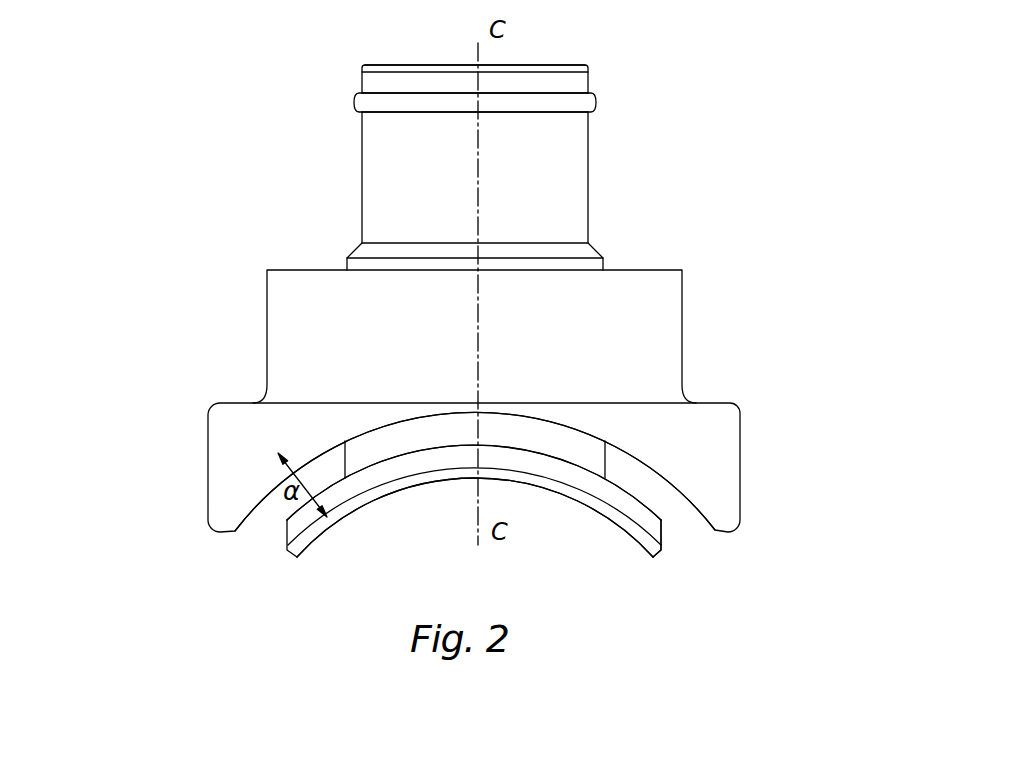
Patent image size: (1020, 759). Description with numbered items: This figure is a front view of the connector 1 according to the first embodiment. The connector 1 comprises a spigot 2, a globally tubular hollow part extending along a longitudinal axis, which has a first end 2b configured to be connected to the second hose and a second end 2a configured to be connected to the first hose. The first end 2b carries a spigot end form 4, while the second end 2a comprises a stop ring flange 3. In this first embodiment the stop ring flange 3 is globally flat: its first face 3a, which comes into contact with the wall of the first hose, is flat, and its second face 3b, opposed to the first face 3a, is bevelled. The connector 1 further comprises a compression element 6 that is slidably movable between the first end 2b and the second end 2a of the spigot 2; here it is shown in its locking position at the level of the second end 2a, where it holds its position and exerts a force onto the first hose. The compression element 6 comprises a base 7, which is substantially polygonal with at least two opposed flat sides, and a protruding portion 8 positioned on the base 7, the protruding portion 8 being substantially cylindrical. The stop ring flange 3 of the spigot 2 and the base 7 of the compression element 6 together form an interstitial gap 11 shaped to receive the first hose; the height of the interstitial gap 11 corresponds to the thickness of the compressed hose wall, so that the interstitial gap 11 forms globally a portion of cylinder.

The connector 1 is at (137, 286).
The spigot 2 is at (459, 143).
The second end 2a is at (672, 565).
The first end 2b is at (549, 63).
The stop ring flange 3 is at (526, 525).
The first face 3a is at (647, 508).
The second face 3b is at (637, 540).
The spigot end form 4 is at (577, 103).
The compression element 6 is at (454, 467).
The base 7 is at (705, 440).
The protruding portion 8 is at (630, 322).
The interstitial gap 11 is at (252, 536).